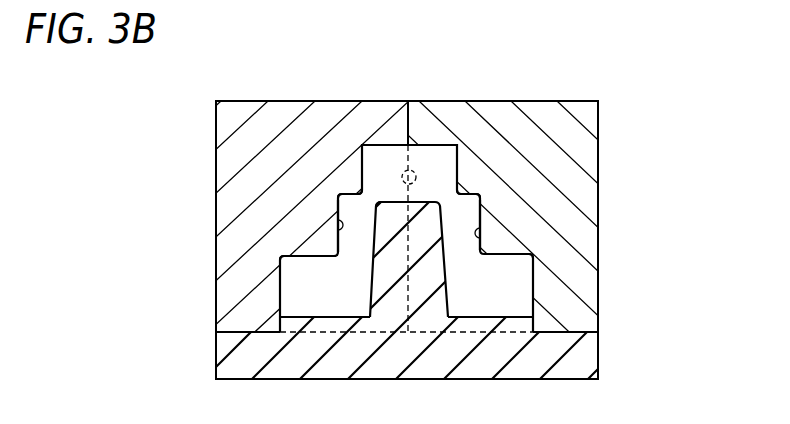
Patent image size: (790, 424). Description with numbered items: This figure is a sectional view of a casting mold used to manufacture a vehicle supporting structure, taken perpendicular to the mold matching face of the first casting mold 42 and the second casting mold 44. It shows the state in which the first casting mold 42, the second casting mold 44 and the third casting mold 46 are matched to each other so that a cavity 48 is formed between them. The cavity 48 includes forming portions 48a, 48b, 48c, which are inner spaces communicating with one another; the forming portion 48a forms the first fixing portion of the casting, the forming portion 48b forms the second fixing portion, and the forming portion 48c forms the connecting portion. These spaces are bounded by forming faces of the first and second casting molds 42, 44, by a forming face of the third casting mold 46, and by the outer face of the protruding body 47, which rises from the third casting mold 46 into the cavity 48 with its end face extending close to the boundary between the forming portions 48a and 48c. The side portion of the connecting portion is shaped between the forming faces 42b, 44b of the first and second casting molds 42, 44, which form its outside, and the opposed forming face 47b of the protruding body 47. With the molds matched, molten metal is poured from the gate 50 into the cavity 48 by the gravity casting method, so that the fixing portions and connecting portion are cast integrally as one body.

The first casting mold 42 is at (590, 125).
The forming face 42b is at (482, 243).
The second casting mold 44 is at (247, 108).
The forming face 44b is at (340, 225).
The third casting mold 46 is at (592, 350).
The protruding body 47 is at (387, 258).
The forming face 47b is at (378, 207).
The cavity 48 is at (445, 193).
The forming portion 48a is at (432, 148).
The forming portion 48b is at (513, 289).
The forming portion 48c is at (463, 217).
The gate 50 is at (401, 169).